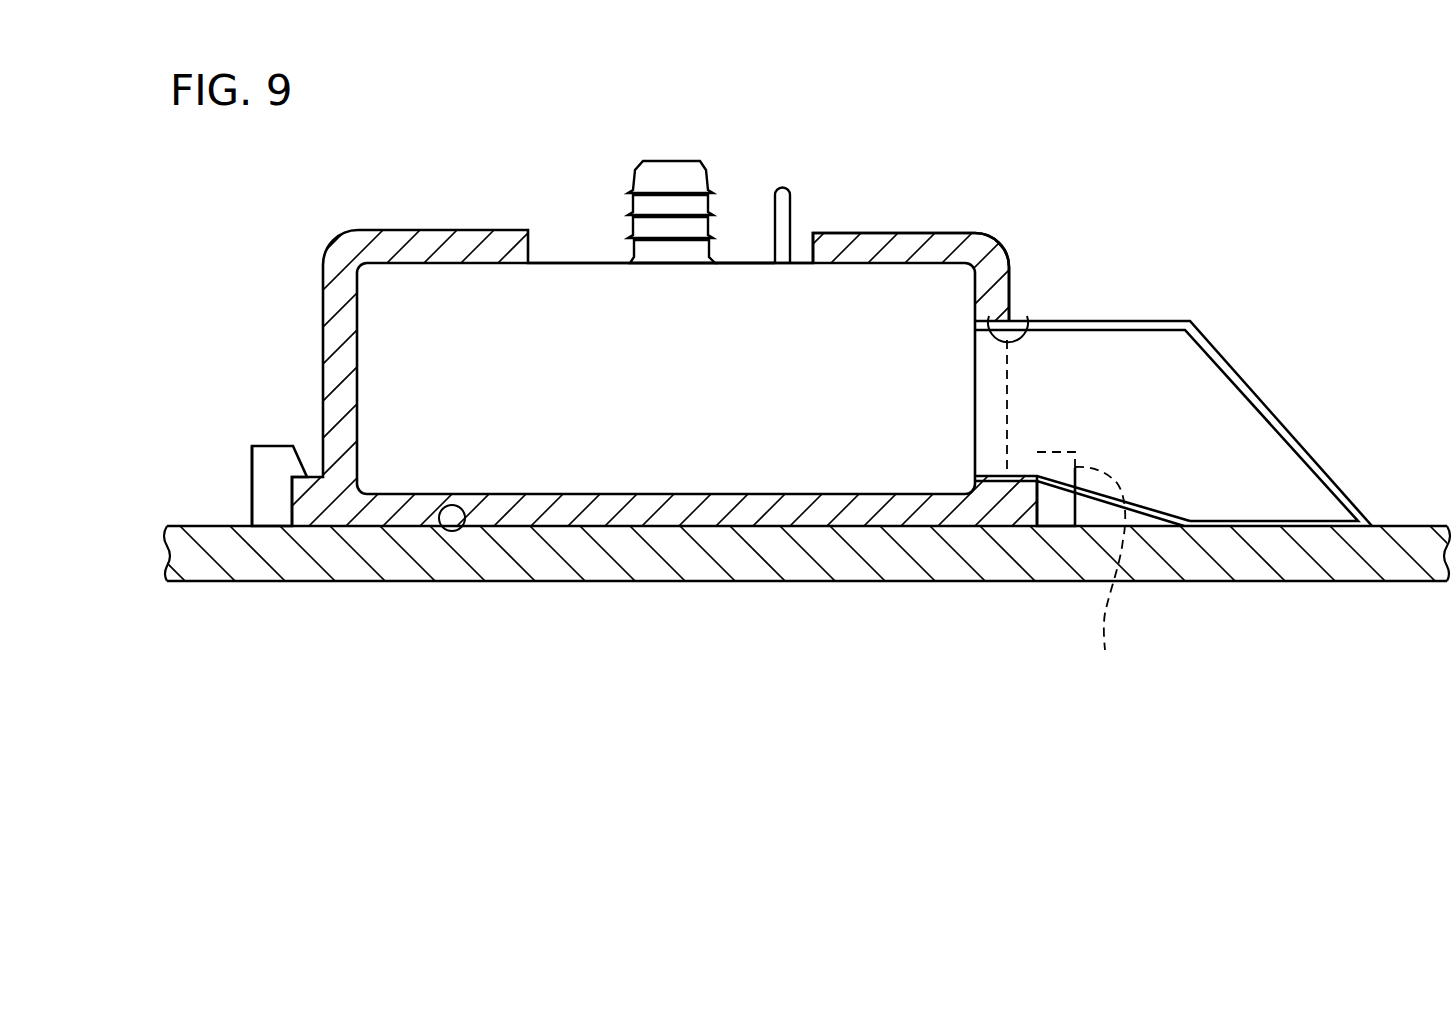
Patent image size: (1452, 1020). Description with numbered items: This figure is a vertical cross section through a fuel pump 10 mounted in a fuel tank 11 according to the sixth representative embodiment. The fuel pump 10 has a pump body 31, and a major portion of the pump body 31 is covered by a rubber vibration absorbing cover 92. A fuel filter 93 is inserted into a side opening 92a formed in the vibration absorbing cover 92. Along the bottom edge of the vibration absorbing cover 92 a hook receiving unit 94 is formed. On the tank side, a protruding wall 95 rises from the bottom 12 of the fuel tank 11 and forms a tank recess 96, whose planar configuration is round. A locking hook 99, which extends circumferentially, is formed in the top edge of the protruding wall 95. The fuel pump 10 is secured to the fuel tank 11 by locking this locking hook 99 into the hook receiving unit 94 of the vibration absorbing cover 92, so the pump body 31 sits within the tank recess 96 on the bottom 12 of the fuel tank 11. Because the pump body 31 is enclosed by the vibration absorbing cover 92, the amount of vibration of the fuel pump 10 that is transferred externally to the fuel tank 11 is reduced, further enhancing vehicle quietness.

The fuel pump 10 is at (578, 244).
The pump body 31 is at (744, 263).
The vibration absorbing cover 92 is at (877, 232).
The side opening 92a is at (1030, 330).
The fuel filter 93 is at (1142, 320).
The hook receiving unit 94 is at (283, 510).
The protruding wall 95 is at (252, 477).
The tank recess 96 is at (465, 523).
The locking hook 99 is at (1030, 472).
The fuel tank 11 is at (352, 583).
The bottom 12 is at (835, 583).